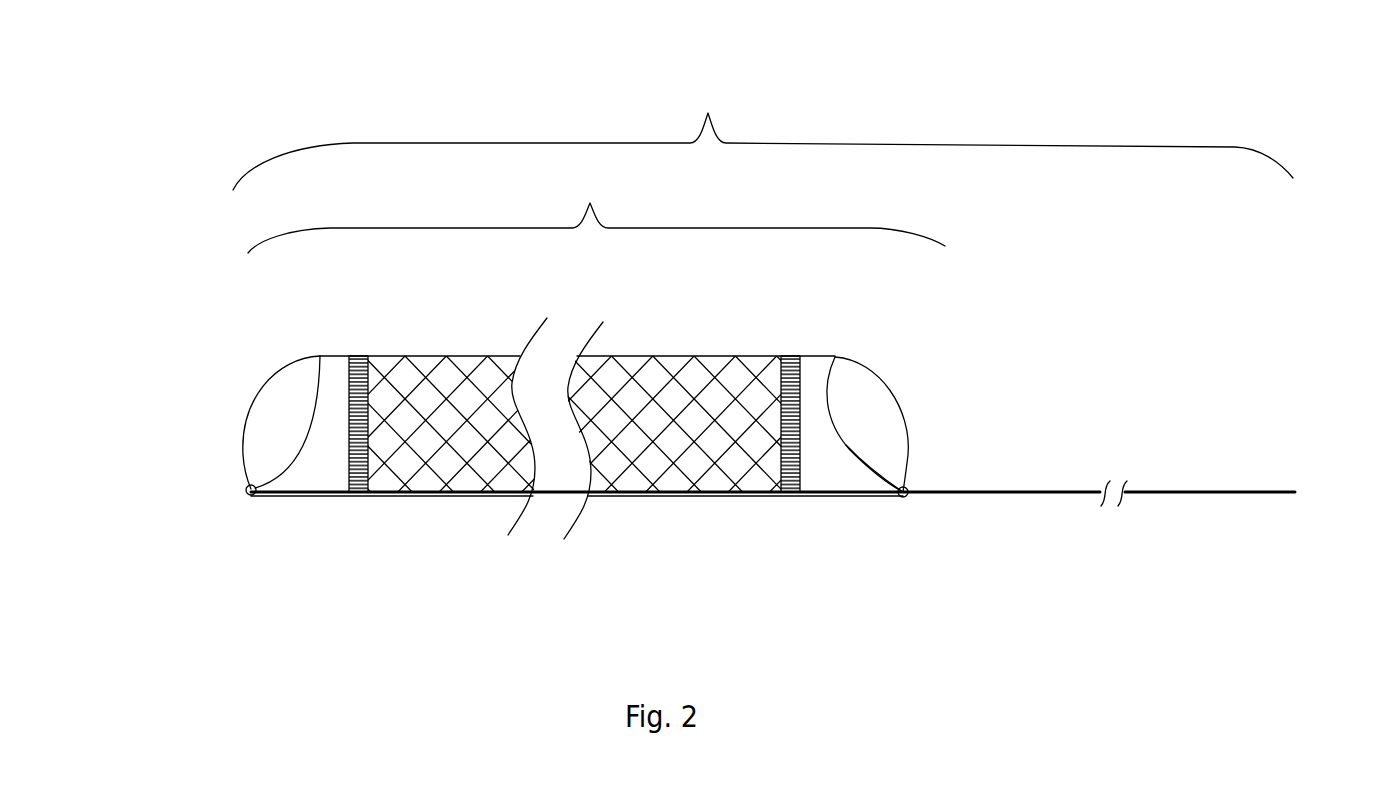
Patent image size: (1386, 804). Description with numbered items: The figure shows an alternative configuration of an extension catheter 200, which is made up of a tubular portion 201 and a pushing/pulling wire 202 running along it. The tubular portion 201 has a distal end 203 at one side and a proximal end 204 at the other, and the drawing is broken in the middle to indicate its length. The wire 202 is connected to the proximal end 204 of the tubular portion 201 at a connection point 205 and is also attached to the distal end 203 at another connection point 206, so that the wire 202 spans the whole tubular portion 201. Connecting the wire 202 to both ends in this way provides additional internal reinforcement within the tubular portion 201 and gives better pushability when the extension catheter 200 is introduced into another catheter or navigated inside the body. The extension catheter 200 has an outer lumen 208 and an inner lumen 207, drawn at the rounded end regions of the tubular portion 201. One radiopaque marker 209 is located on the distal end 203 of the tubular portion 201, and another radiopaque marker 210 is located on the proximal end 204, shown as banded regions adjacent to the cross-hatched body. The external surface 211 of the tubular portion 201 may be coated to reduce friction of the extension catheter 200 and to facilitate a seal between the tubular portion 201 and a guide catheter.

The extension catheter 200 is at (763, 138).
The tubular portion 201 is at (596, 214).
The pushing/pulling wire 202 is at (776, 439).
The distal end 203 is at (209, 422).
The proximal end 204 is at (962, 410).
The connection point 205 is at (964, 562).
The connection point 206 is at (189, 534).
The inner lumen 207 is at (583, 375).
The outer lumen 208 is at (891, 552).
The radiopaque marker 209 is at (360, 380).
The radiopaque marker 210 is at (796, 489).
The external surface 211 is at (570, 439).